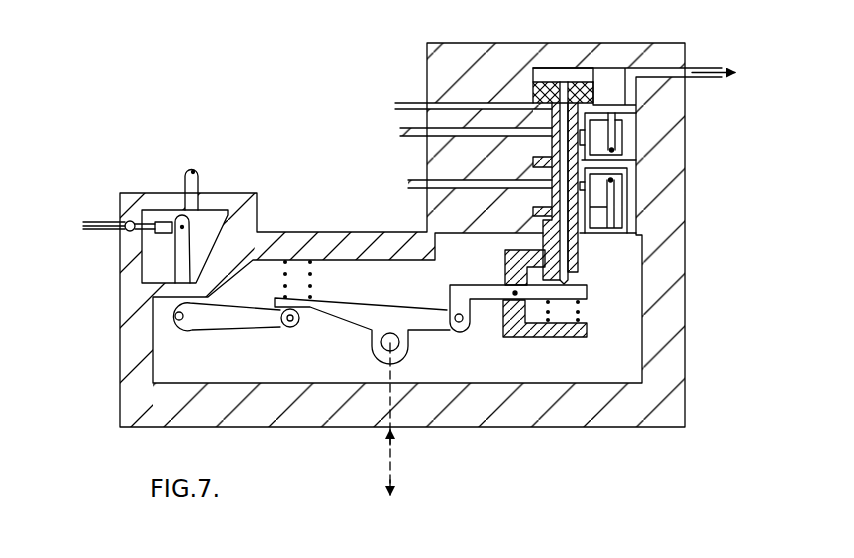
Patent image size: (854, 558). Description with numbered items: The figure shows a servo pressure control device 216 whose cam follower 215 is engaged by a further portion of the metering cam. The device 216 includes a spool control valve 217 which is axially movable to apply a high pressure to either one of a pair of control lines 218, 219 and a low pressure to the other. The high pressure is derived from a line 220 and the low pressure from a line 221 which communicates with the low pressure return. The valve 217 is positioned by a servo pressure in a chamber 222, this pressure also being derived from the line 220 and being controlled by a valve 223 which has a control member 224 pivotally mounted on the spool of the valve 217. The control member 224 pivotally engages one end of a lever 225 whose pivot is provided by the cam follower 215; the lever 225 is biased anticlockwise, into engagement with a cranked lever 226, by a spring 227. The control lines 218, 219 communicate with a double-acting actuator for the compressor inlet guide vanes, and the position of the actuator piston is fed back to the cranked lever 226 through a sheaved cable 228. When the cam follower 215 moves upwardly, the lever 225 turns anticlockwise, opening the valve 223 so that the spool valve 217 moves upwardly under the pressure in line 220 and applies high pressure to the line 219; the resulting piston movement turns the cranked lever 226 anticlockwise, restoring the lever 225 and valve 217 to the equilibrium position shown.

The cam follower 215 is at (400, 346).
The servo pressure control device 216 is at (108, 368).
The spool control valve 217 is at (593, 100).
The control line 218 is at (400, 130).
The control line 219 is at (408, 182).
The line 220 is at (395, 103).
The line 221 is at (640, 214).
The chamber 222 is at (567, 72).
The valve 223 is at (568, 284).
The control member 224 is at (567, 292).
The lever 225 is at (375, 318).
The cranked lever 226 is at (200, 317).
The spring 227 is at (312, 273).
The sheaved cable 228 is at (95, 220).